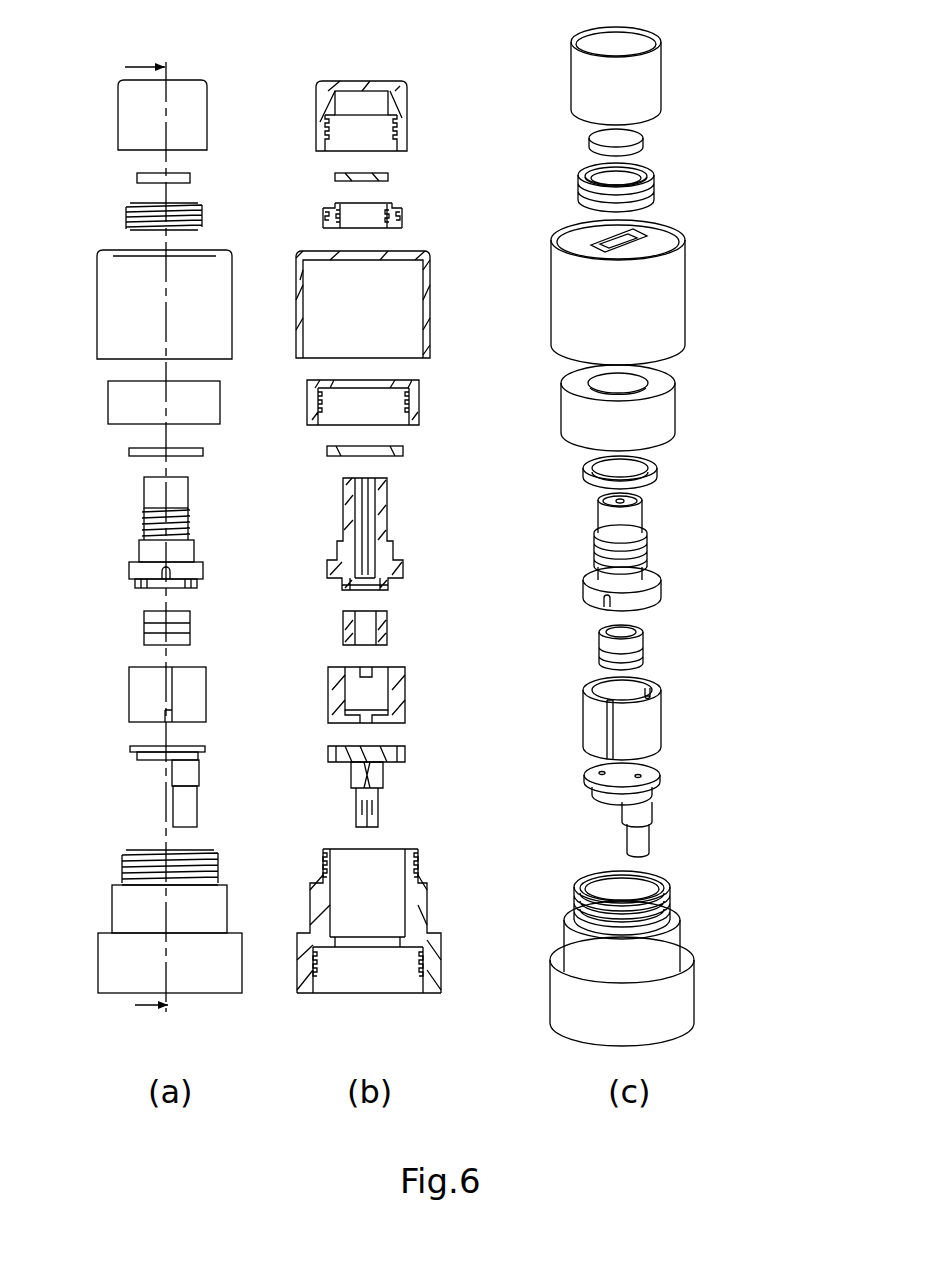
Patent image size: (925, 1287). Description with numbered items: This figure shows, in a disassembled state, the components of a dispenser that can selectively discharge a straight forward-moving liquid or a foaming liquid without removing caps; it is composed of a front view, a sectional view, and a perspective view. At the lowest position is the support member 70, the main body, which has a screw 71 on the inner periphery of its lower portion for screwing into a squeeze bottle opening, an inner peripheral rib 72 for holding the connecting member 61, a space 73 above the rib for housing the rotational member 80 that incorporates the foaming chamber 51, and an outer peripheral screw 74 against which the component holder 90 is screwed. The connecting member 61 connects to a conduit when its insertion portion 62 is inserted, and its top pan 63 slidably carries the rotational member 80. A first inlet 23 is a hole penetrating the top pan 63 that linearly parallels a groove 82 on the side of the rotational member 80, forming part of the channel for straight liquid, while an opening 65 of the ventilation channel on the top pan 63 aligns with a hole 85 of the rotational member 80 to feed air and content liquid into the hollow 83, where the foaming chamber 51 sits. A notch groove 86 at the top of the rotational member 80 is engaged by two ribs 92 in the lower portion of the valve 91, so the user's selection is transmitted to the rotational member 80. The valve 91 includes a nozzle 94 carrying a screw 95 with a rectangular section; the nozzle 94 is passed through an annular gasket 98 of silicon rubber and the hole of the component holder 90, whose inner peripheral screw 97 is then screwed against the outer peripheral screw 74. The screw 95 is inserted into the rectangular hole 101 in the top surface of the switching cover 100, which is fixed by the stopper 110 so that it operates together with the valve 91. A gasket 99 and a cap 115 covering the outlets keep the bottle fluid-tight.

The first inlet 23 is at (602, 771).
The foaming chamber 51 is at (595, 650).
The connecting member 61 is at (120, 752).
The insertion portion 62 is at (172, 807).
The top pan 63 is at (187, 740).
The opening 65 is at (633, 776).
The support member 70 is at (105, 917).
The screw 71 is at (413, 978).
The inner peripheral rib 72 is at (397, 943).
The space 73 is at (358, 895).
The outer peripheral screw 74 is at (675, 898).
The rotational member 80 is at (629, 712).
The groove 82 is at (614, 732).
The hollow 83 is at (355, 692).
The hole 85 is at (368, 725).
The notch groove 86 is at (647, 692).
The component holder 90 is at (558, 413).
The valve 91 is at (626, 561).
The ribs 92 is at (654, 606).
The nozzle 94 is at (647, 515).
The screw 95 is at (648, 552).
The inner peripheral screw 97 is at (322, 410).
The annular gasket 98 is at (580, 473).
The gasket 99 is at (585, 144).
The switching cover 100 is at (548, 296).
The rectangular hole 101 is at (622, 240).
The stopper 110 is at (575, 188).
The cap 115 is at (570, 77).